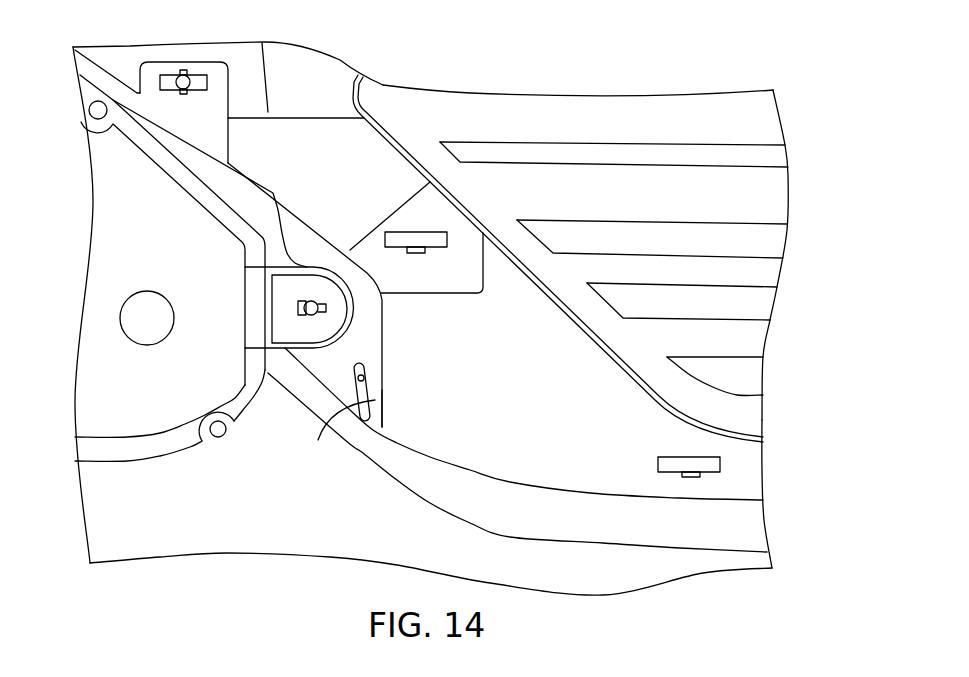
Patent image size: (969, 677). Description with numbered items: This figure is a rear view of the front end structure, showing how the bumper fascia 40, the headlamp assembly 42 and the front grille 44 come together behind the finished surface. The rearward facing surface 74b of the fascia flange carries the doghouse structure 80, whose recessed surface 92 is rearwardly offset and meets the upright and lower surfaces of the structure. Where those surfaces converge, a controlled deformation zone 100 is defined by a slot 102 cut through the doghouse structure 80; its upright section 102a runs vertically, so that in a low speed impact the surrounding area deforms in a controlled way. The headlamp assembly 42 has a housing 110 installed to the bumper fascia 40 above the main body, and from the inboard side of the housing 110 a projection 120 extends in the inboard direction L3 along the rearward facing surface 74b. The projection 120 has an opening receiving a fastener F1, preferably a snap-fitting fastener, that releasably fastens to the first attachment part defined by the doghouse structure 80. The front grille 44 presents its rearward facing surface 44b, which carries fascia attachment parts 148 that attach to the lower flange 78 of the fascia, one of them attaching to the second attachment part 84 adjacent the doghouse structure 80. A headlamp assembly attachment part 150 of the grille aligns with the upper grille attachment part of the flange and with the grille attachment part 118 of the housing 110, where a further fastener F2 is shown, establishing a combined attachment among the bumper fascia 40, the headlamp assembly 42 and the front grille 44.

The bumper fascia 40 is at (593, 572).
The headlamp assembly 42 is at (123, 186).
The front grille 44 is at (645, 120).
The rearward facing surface 44b is at (758, 194).
The rearward facing surface 74b is at (390, 170).
The lower flange 78 is at (740, 477).
The doghouse structure 80 is at (383, 344).
The second attachment part 84 is at (447, 235).
The recessed surface 92 is at (362, 287).
The controlled deformation zone 100 is at (386, 407).
The slot 102 is at (368, 373).
The upright section 102a is at (320, 435).
The housing 110 is at (132, 252).
The grille attachment part 118 is at (150, 78).
The projection 120 is at (288, 330).
The fascia attachment parts 148 is at (413, 240).
The headlamp assembly attachment part 150 is at (168, 90).
The fastener F1 is at (327, 309).
The second fastening point F2 is at (193, 78).
The inboard direction L3 is at (282, 586).